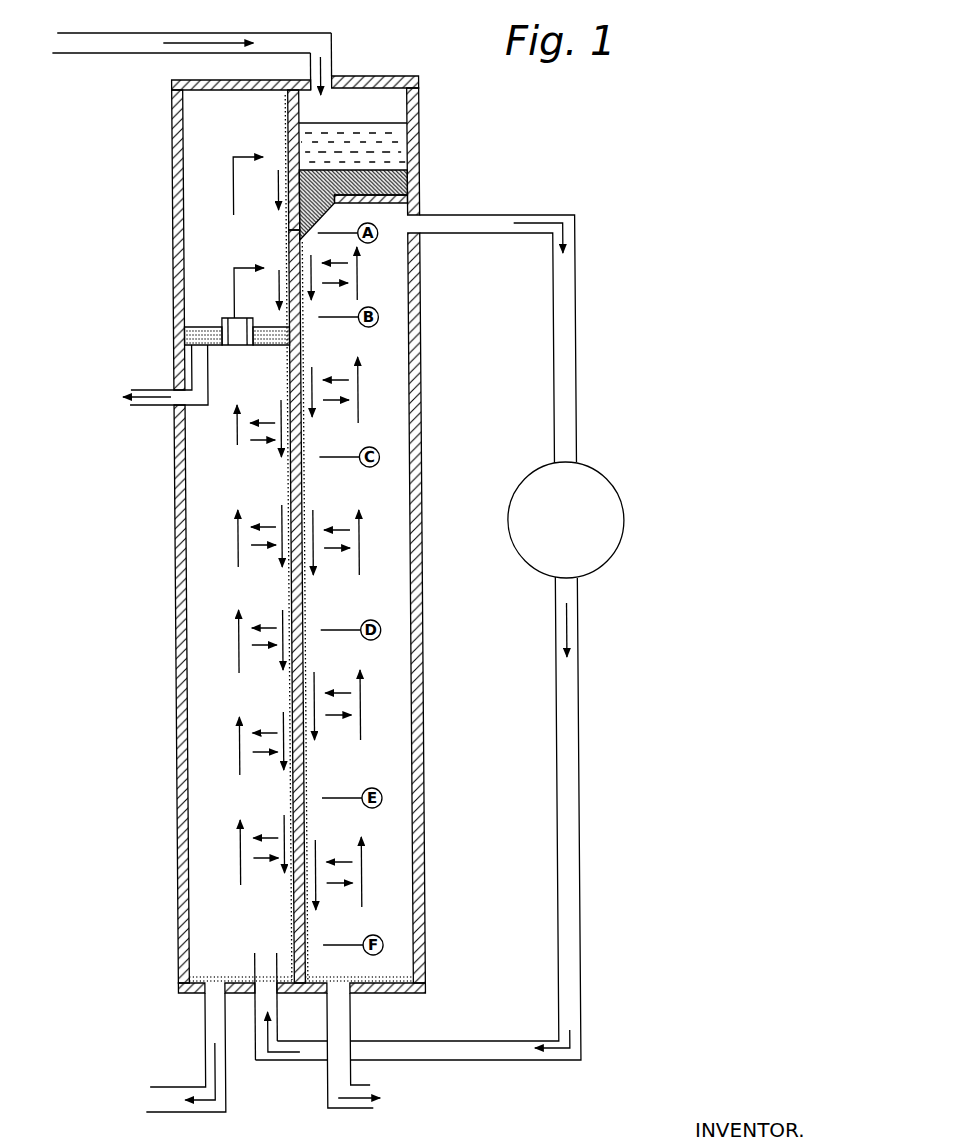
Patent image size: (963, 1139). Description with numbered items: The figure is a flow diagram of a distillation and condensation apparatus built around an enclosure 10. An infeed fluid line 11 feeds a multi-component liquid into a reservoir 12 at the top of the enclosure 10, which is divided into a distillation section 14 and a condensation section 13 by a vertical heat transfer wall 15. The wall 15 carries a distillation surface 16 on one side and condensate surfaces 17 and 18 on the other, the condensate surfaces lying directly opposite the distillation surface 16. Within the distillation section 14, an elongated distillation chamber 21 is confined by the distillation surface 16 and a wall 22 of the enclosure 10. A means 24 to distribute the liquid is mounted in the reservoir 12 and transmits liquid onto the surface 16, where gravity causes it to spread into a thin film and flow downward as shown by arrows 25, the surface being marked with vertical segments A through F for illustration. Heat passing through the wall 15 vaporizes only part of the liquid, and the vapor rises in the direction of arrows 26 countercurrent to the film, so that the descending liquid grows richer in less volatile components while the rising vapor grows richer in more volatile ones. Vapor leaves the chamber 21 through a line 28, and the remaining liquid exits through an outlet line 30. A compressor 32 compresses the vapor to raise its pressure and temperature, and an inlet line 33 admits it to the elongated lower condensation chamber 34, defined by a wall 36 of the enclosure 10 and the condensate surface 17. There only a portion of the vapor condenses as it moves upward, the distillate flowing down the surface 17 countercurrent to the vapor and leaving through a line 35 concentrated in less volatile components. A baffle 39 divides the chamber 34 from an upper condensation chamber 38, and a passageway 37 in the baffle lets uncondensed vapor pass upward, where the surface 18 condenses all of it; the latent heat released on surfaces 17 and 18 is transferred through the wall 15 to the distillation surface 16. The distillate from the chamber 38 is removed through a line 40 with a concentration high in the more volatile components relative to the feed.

The enclosure 10 is at (409, 150).
The infeed fluid line 11 is at (191, 33).
The reservoir 12 is at (398, 124).
The condensation section 13 is at (168, 176).
The distillation section 14 is at (420, 510).
The vertical heat transfer wall 15 is at (293, 588).
The distillation surface 16 is at (302, 497).
The condensate surface 17 is at (284, 482).
The condensate surface 18 is at (290, 160).
The distillation chamber 21 is at (398, 775).
The wall 22 is at (413, 675).
The means to distribute the liquid 24 is at (397, 187).
The arrows 25 is at (320, 248).
The arrows 26 is at (360, 292).
The line 28 is at (545, 217).
The outlet line 30 is at (340, 1017).
The compressor 32 is at (610, 494).
The inlet line 33 is at (270, 1013).
The lower condensation chamber 34 is at (202, 793).
The line 35 is at (197, 1022).
The wall 36 is at (178, 622).
The passageway 37 is at (220, 322).
The upper condensation chamber 38 is at (193, 210).
The baffle 39 is at (236, 347).
The line 40 is at (146, 407).